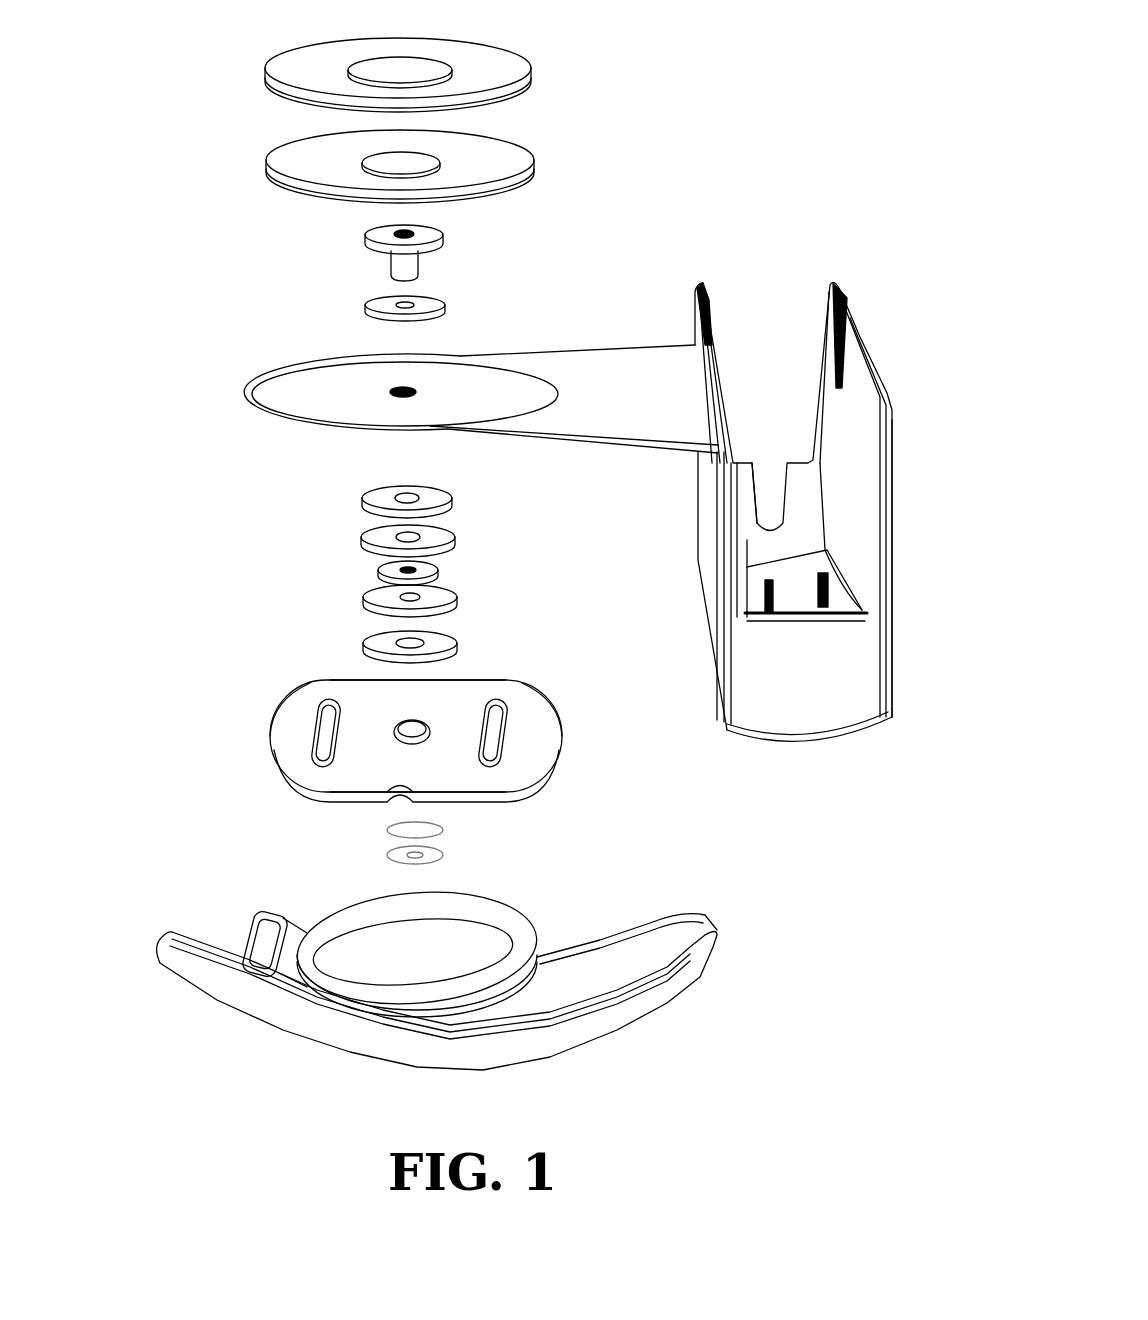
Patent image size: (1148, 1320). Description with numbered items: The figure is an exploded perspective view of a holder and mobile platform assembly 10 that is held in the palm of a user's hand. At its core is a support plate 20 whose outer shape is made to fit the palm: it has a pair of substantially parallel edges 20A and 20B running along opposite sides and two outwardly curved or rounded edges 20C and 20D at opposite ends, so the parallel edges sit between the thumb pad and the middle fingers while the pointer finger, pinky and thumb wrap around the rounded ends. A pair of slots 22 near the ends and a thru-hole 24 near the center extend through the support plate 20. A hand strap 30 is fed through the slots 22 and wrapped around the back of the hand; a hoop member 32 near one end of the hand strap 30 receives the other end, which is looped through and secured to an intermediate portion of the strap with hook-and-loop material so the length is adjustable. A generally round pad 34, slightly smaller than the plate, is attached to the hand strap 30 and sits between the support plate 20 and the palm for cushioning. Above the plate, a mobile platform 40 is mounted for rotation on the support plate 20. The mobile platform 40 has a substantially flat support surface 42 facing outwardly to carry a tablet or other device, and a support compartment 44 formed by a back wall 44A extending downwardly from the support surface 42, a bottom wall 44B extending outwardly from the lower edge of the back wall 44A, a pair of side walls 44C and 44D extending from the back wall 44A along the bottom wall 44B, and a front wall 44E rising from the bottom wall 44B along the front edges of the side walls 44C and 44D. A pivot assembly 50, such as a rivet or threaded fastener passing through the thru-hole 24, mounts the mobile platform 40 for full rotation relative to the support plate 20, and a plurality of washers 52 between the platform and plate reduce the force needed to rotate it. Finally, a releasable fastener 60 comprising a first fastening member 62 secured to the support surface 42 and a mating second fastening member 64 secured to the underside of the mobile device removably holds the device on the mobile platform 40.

The holder and mobile platform assembly 10 is at (118, 55).
The support plate 20 is at (526, 706).
The substantially parallel edge 20A is at (445, 682).
The substantially parallel edge 20B is at (478, 800).
The outwardly curved edge 20C is at (272, 734).
The outwardly curved edge 20D is at (558, 730).
The slots 22 is at (320, 750).
The thru-hole 24 is at (415, 740).
The hand strap 30 is at (685, 932).
The hoop member 32 is at (256, 930).
The pad 34 is at (476, 944).
The mobile platform 40 is at (851, 256).
The support surface 42 is at (582, 366).
The support compartment 44 is at (762, 288).
The back wall 44A is at (712, 556).
The bottom wall 44B is at (812, 596).
The side wall 44C is at (812, 710).
The side wall 44D is at (796, 460).
The front wall 44E is at (893, 568).
The pivot assembly 50 is at (354, 228).
The washers 52 is at (350, 490).
The releasable fastener 60 is at (247, 55).
The first fastening member 62 is at (500, 162).
The second fastening member 64 is at (507, 58).